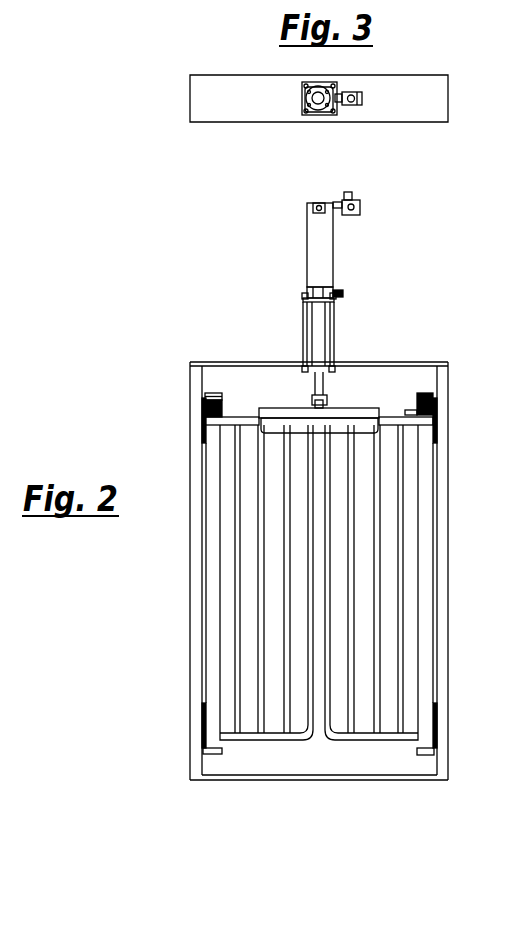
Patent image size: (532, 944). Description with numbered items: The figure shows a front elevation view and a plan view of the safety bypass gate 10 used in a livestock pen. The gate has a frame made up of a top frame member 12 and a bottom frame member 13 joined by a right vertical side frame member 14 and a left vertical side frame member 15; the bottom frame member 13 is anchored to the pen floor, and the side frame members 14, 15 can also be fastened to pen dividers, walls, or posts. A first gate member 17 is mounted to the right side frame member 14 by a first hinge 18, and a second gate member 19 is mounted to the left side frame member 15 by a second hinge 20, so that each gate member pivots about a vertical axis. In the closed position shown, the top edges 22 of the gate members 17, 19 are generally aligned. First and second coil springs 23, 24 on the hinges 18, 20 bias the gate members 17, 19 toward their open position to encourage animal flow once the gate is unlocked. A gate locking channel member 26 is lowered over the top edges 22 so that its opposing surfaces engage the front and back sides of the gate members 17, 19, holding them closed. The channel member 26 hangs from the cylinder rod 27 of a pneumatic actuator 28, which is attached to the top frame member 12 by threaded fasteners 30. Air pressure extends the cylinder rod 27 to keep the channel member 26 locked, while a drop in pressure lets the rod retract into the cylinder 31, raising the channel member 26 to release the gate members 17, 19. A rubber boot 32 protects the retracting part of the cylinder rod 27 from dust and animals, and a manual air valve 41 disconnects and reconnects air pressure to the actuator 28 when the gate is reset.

In FIG. 3, the safety bypass gate 10 is at (200, 142).
In FIG. 2, the safety bypass gate 10 is at (212, 341).
In FIG. 3, the top frame member 12 is at (223, 100).
In FIG. 2, the top frame member 12 is at (207, 362).
In FIG. 2, the bottom frame member 13 is at (220, 780).
In FIG. 2, the right vertical side frame member 14 is at (444, 563).
In FIG. 2, the left vertical side frame member 15 is at (190, 557).
In FIG. 2, the first gate member 17 is at (360, 737).
In FIG. 2, the first hinge 18 is at (434, 755).
In FIG. 2, the second gate member 19 is at (281, 740).
In FIG. 2, the second hinge 20 is at (205, 750).
In FIG. 2, the top edges 22 is at (245, 418).
In FIG. 2, the first coil spring 23 is at (435, 395).
In FIG. 2, the second coil spring 24 is at (202, 398).
In FIG. 2, the gate locking channel member 26 is at (348, 418).
In FIG. 2, the cylinder rod 27 is at (323, 378).
In FIG. 3, the pneumatic actuator 28 is at (305, 110).
In FIG. 2, the pneumatic actuator 28 is at (318, 253).
In FIG. 2, the threaded fasteners 30 is at (303, 325).
In FIG. 2, the cylinder 31 is at (333, 265).
In FIG. 2, the rubber boot 32 is at (320, 325).
In FIG. 3, the manual air valve 41 is at (353, 103).
In FIG. 2, the manual air valve 41 is at (360, 207).